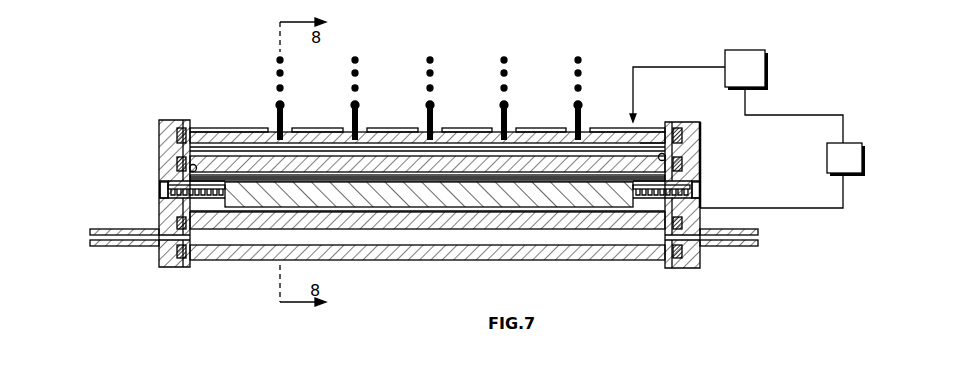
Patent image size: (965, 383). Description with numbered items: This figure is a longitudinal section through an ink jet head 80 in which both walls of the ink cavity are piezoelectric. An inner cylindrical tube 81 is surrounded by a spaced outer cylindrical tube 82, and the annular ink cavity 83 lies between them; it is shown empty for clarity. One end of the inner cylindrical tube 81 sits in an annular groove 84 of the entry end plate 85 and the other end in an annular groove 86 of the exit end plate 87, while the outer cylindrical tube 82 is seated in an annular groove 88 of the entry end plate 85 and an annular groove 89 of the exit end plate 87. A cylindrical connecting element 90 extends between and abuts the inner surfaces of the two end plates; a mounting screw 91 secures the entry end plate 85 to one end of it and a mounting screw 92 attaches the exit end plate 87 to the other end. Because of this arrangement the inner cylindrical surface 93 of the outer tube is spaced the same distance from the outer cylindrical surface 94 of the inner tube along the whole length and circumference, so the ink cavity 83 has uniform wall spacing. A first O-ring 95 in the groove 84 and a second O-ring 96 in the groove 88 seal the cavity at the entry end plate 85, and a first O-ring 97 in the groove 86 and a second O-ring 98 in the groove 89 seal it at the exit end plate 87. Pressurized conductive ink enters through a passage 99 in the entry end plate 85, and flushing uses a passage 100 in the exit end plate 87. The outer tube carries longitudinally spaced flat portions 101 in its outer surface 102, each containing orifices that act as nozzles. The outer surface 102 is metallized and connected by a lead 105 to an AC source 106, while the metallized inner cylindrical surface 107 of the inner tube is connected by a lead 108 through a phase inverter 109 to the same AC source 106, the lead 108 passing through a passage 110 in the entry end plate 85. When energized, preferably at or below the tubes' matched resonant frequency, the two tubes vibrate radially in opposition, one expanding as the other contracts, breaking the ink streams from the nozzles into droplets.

The ink jet head 80 is at (146, 123).
The inner cylindrical tube 81 is at (207, 143).
The outer cylindrical tube 82 is at (220, 121).
The ink cavity 83 is at (390, 157).
The annular groove 84 is at (665, 152).
The entry end plate 85 is at (708, 164).
The annular groove 86 is at (188, 168).
The exit end plate 87 is at (150, 210).
The annular groove 88 is at (673, 127).
The annular groove 89 is at (194, 248).
The cylindrical connecting element 90 is at (594, 214).
The mounting screw 91 is at (703, 183).
The mounting screw 92 is at (160, 186).
The inner cylindrical surface 93 is at (316, 150).
The outer cylindrical surface 94 is at (522, 173).
The first O-ring 95 is at (668, 157).
The second O-ring 96 is at (704, 260).
The first O-ring 97 is at (190, 150).
The second O-ring 98 is at (190, 126).
The passage 99 is at (760, 246).
The passage 100 is at (93, 243).
The flat portions 101 is at (278, 132).
The outer surface 102 is at (644, 122).
The lead 105 is at (676, 67).
The AC source 106 is at (766, 51).
The inner cylindrical surface 107 is at (508, 213).
The lead 108 is at (846, 207).
The phase inverter 109 is at (864, 153).
The passage 110 is at (702, 203).